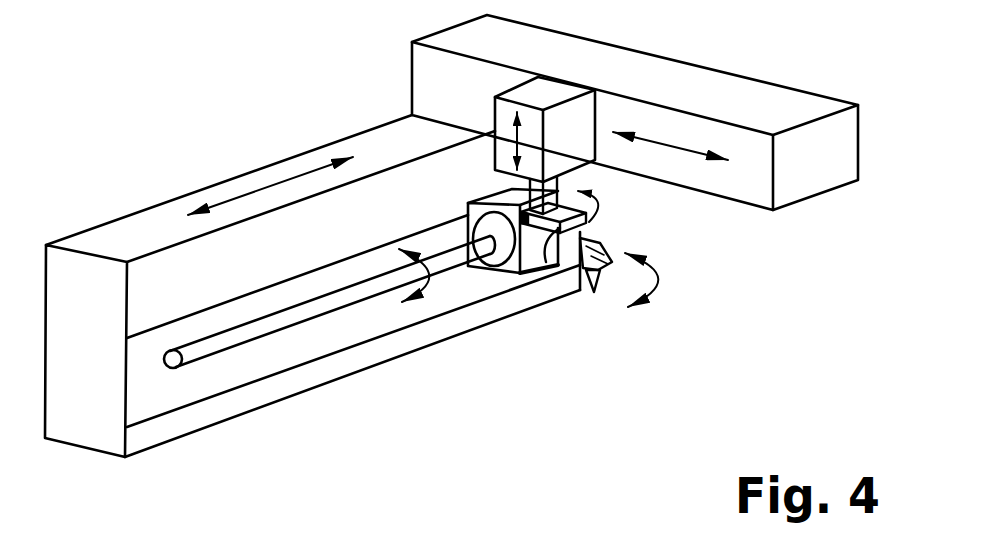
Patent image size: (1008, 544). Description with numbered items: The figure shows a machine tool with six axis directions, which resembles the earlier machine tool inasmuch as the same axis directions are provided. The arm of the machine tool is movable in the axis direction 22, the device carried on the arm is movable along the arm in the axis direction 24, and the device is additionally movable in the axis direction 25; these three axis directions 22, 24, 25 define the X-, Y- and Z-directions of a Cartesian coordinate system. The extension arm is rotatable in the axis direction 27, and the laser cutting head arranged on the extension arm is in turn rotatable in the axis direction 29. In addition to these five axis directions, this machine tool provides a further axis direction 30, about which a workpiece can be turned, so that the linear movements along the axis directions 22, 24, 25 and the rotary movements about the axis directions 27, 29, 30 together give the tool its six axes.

The axis direction 22 is at (272, 186).
The axis direction 24 is at (668, 137).
The axis direction 25 is at (493, 136).
The axis direction 27 is at (543, 240).
The axis direction 29 is at (663, 279).
The axis direction 30 is at (429, 297).